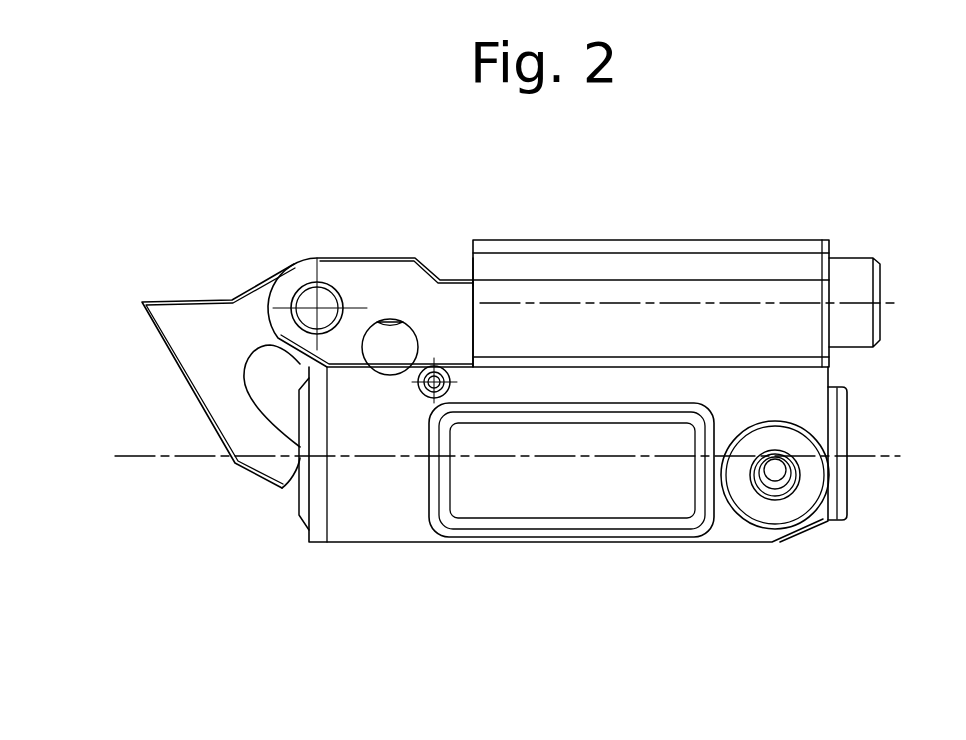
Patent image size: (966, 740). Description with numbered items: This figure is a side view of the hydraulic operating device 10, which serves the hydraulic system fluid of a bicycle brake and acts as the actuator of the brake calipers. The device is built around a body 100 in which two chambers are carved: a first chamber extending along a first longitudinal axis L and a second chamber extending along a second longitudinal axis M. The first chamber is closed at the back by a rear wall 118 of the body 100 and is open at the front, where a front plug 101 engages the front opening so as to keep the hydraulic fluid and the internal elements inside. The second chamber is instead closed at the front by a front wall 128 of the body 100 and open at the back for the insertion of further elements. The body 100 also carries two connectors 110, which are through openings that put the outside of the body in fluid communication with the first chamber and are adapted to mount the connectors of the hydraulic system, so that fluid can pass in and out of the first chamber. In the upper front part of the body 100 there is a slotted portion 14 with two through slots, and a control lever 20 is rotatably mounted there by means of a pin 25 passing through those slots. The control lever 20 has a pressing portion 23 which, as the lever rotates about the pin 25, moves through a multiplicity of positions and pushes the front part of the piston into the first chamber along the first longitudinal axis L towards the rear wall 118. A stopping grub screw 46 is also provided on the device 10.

The hydraulic operating device 10 is at (708, 256).
The body 100 is at (573, 280).
The front wall 128 is at (473, 264).
The slotted portion 14 is at (363, 273).
The pin 25 is at (326, 302).
The control lever 20 is at (195, 301).
The pressing portion 23 is at (270, 463).
The front plug 101 is at (302, 517).
The stopping grub screw 46 is at (422, 394).
The connectors 110 is at (777, 480).
The rear wall 118 is at (845, 503).
The second longitudinal axis M is at (883, 303).
The first longitudinal axis L is at (888, 456).